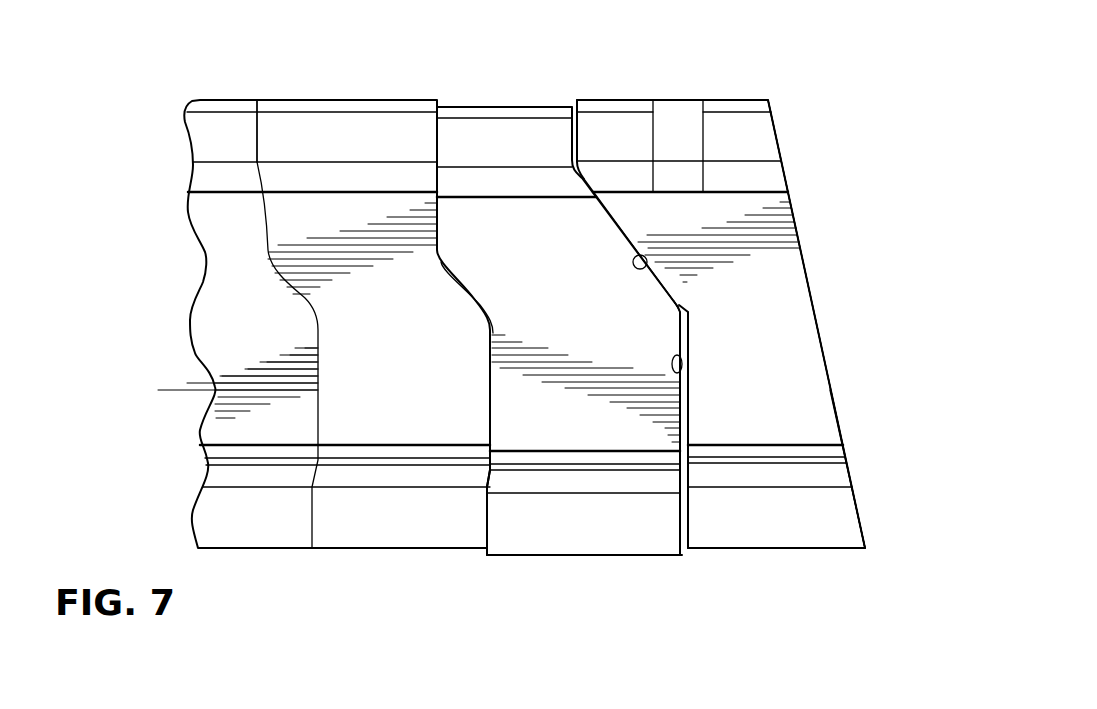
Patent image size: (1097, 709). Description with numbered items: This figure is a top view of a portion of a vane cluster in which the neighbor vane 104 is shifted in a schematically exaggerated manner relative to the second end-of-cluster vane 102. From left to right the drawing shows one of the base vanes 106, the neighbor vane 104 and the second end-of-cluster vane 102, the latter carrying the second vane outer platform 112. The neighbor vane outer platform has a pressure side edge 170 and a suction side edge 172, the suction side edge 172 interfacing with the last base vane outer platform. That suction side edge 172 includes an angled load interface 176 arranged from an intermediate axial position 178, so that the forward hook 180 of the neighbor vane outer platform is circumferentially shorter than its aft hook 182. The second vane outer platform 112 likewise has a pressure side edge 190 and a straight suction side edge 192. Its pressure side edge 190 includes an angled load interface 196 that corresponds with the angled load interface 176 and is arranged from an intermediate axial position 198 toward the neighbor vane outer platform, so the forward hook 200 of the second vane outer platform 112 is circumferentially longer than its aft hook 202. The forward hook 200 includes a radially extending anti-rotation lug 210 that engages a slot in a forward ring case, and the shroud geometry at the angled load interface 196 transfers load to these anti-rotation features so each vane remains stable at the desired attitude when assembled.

The second end-of-cluster vane 102 is at (797, 378).
The neighbor vane 104 is at (488, 228).
The base vanes 106 is at (333, 329).
The second vane outer platform 112 is at (792, 342).
The pressure side edge 170 is at (491, 403).
The suction side edge 172 is at (688, 388).
The angled load interface 176 is at (572, 88).
The intermediate axial position 178 is at (676, 311).
The forward hook 180 is at (500, 130).
The aft hook 182 is at (518, 543).
The pressure side edge 190 is at (688, 352).
The suction side edge 192 is at (842, 427).
The angled load interface 196 is at (648, 266).
The intermediate axial position 198 is at (690, 322).
The forward hook 200 is at (762, 142).
The aft hook 202 is at (771, 533).
The anti-rotation lug 210 is at (675, 118).